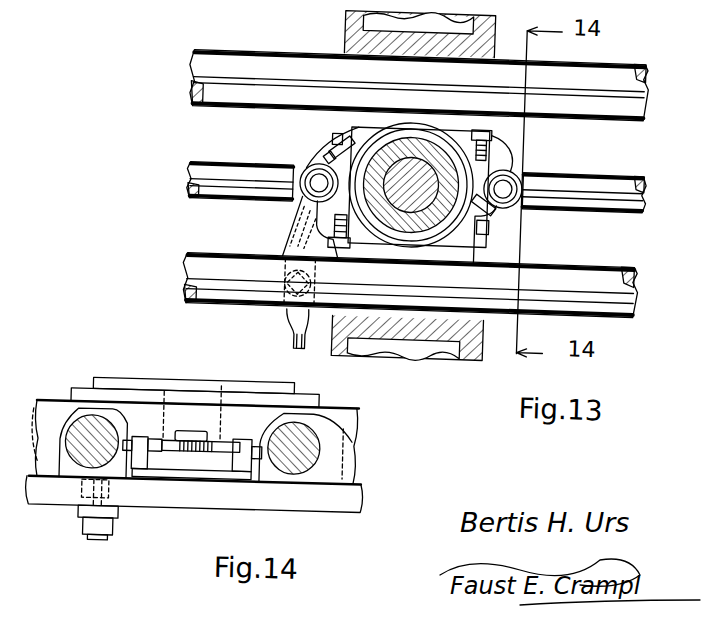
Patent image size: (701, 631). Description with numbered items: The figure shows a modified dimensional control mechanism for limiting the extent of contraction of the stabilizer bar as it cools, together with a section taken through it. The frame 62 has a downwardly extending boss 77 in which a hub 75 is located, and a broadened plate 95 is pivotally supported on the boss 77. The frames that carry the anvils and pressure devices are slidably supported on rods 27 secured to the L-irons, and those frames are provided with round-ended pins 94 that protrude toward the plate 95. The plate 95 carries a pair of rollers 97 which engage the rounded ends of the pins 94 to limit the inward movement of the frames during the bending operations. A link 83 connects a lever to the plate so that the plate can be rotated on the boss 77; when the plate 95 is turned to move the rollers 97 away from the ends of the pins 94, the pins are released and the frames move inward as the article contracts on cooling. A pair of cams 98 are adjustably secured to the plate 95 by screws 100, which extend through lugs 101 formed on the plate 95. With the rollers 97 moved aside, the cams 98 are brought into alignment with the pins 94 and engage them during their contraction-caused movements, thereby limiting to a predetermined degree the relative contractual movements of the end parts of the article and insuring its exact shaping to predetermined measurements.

In FIG. 13, the rods 27 is at (578, 71).
In FIG. 14, the rods 27 is at (300, 452).
In FIG. 13, the frame 62 is at (408, 328).
In FIG. 14, the frame 62 is at (297, 405).
In FIG. 13, the hub 75 is at (423, 195).
In FIG. 13, the boss 77 is at (443, 196).
In FIG. 14, the boss 77 is at (226, 421).
In FIG. 13, the link 83 is at (303, 341).
In FIG. 14, the link 83 is at (55, 508).
In FIG. 13, the round-ended pins 94 is at (230, 186).
In FIG. 13, the plate 95 is at (349, 152).
In FIG. 14, the plate 95 is at (210, 460).
In FIG. 13, the rollers 97 is at (302, 169).
In FIG. 14, the rollers 97 is at (175, 458).
In FIG. 13, the cams 98 is at (311, 223).
In FIG. 14, the cams 98 is at (235, 459).
In FIG. 13, the screws 100 is at (329, 163).
In FIG. 14, the screws 100 is at (130, 447).
In FIG. 13, the lugs 101 is at (489, 130).